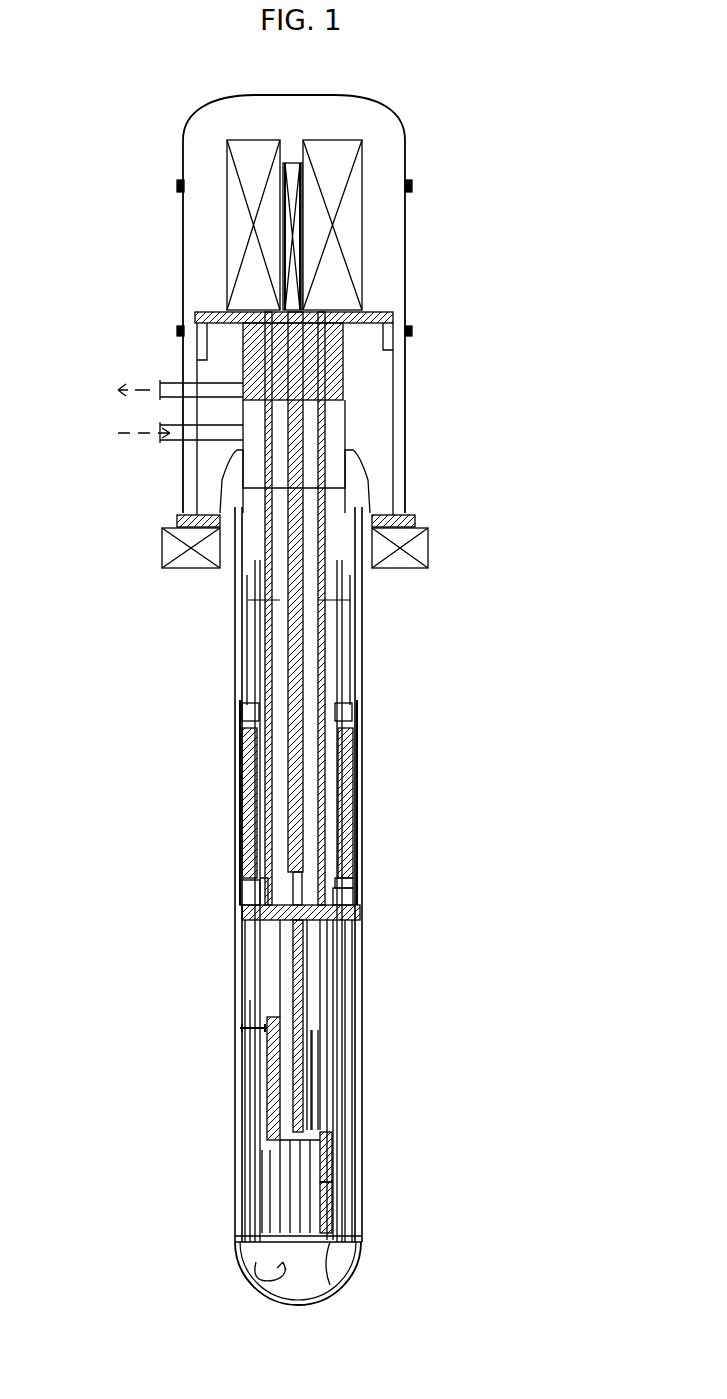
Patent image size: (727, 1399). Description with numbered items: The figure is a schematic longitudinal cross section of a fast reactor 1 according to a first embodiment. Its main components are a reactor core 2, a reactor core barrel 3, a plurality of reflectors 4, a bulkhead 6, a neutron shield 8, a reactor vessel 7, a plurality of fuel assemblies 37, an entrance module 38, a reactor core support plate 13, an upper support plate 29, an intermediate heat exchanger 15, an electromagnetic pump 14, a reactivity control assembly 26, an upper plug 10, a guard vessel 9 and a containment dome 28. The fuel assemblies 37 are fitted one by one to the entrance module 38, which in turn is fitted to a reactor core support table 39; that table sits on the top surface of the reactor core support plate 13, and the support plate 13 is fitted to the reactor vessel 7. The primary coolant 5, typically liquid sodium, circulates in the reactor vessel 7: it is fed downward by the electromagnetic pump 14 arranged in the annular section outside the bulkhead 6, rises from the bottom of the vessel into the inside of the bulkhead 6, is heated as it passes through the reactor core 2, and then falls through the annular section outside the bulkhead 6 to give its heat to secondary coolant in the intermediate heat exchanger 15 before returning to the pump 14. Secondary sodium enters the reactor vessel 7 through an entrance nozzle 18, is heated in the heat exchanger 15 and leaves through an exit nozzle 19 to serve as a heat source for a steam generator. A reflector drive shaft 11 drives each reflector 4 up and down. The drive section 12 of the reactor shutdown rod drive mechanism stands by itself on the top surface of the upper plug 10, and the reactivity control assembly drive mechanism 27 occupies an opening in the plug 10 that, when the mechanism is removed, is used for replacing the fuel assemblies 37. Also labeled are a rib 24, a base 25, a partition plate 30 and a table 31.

The fast reactor 1 is at (68, 207).
The reactor core 2 is at (310, 1100).
The reactor core barrel 3 is at (335, 978).
The reflector 4 is at (270, 1063).
The primary coolant 5 is at (350, 899).
The bulkhead 6 is at (345, 886).
The reactor vessel 7 is at (353, 1292).
The neutron shield 8 is at (350, 1071).
The guard vessel 9 is at (238, 1090).
The upper plug 10 is at (343, 375).
The reflector drive shaft 11 is at (242, 768).
The drive section 12 is at (362, 236).
The reactor core support plate 13 is at (335, 1245).
The electromagnetic pump 14 is at (357, 817).
The intermediate heat exchanger 15 is at (235, 665).
The entrance nozzle 18 is at (172, 440).
The exit nozzle 19 is at (178, 385).
The rib 24 is at (262, 905).
The base 25 is at (252, 1245).
The reactivity control assembly 26 is at (296, 1003).
The reactivity control assembly drive mechanism 27 is at (296, 163).
The containment dome 28 is at (392, 125).
The upper support plate 29 is at (240, 921).
The partition plate 30 is at (340, 720).
The table 31 is at (430, 548).
The fuel assembly 37 is at (310, 1036).
The entrance module 38 is at (320, 1172).
The reactor core support table 39 is at (318, 1210).